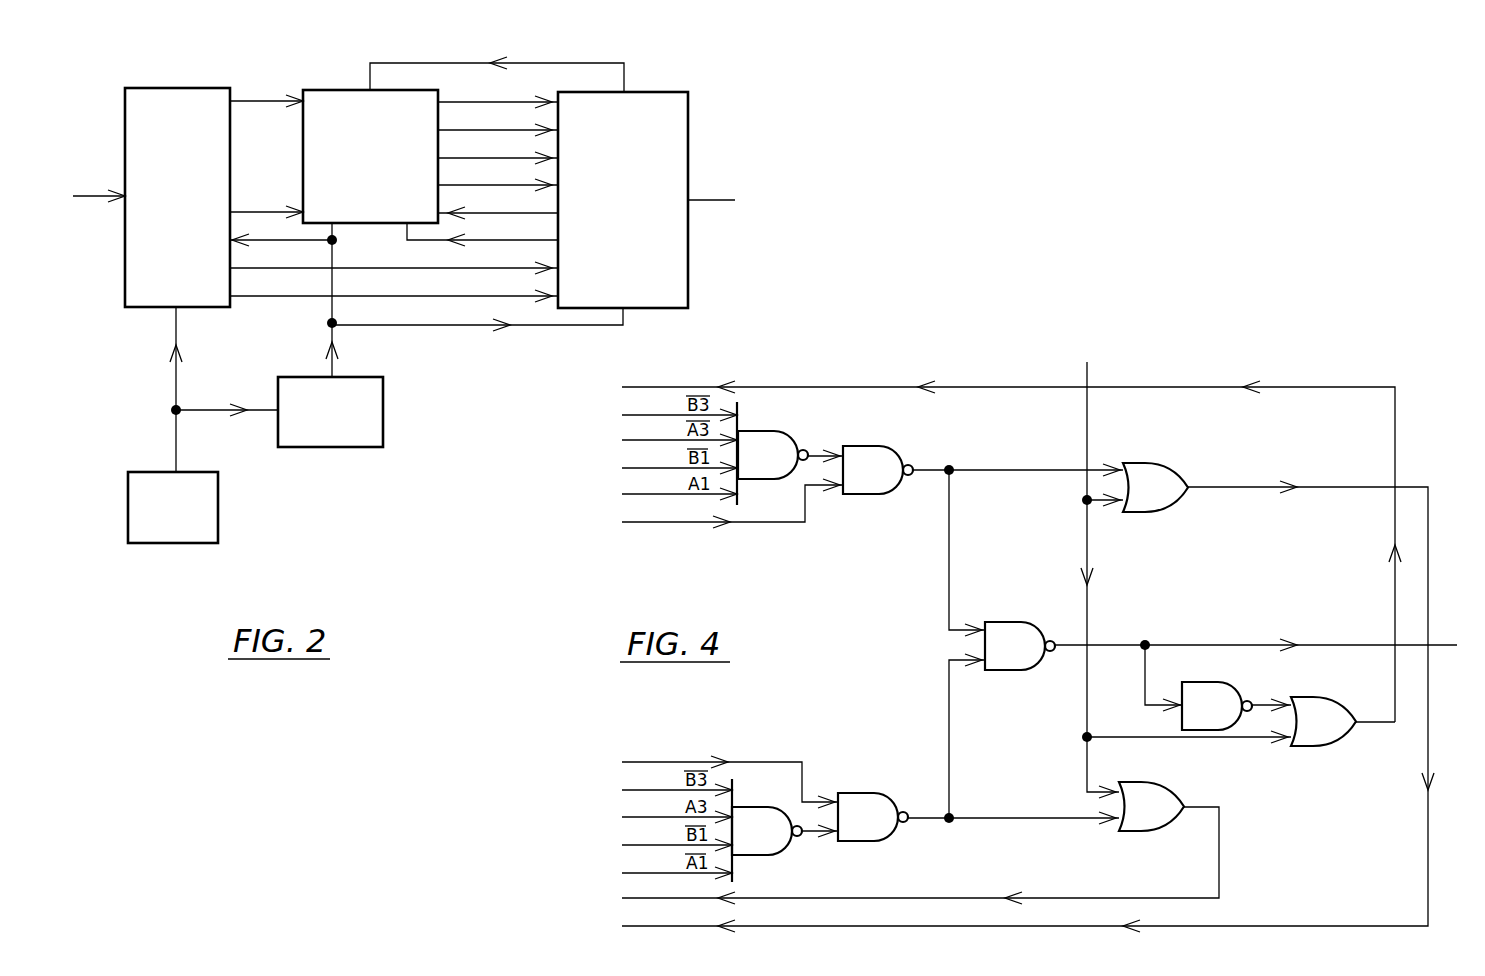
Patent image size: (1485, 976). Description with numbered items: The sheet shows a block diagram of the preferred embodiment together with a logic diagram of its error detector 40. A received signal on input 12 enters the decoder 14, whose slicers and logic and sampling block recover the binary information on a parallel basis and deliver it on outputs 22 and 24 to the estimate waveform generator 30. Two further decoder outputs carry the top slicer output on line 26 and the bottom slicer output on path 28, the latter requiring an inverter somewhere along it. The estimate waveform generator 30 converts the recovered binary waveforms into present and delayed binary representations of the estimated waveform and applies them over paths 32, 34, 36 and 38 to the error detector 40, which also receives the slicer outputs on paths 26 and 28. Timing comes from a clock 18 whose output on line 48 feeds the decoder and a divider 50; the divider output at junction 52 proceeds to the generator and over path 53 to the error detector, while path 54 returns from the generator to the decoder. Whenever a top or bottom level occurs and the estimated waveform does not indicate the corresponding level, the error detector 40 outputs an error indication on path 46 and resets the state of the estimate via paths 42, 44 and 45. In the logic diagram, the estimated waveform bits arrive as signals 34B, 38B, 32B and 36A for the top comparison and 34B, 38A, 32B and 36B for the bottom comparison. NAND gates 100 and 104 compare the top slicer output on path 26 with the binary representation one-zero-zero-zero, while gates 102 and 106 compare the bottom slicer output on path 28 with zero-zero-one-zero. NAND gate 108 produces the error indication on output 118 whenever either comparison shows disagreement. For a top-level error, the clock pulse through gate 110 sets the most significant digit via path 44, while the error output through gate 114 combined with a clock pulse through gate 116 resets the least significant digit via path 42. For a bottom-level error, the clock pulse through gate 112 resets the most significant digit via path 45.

In FIG. 2, the input line 12 is at (89, 194).
In FIG. 2, the decoder 14 is at (198, 88).
In FIG. 2, the clock 18 is at (189, 472).
In FIG. 2, the output 22 is at (273, 101).
In FIG. 2, the output 24 is at (273, 210).
In FIG. 2, the line 26 is at (436, 269).
In FIG. 4, the line 26 is at (667, 520).
In FIG. 2, the path 28 is at (436, 296).
In FIG. 4, the path 28 is at (667, 760).
In FIG. 2, the estimate waveform generator 30 is at (397, 90).
In FIG. 2, the path 32 is at (483, 104).
In FIG. 2, the path 34 is at (483, 132).
In FIG. 2, the path 36 is at (483, 160).
In FIG. 2, the path 38 is at (483, 187).
In FIG. 2, the error detector 40 is at (657, 92).
In FIG. 2, the path 42 is at (590, 64).
In FIG. 4, the path 42 is at (673, 386).
In FIG. 2, the path 44 is at (515, 242).
In FIG. 4, the path 44 is at (667, 924).
In FIG. 2, the path 45 is at (515, 214).
In FIG. 4, the path 45 is at (667, 896).
In FIG. 2, the path 46 is at (700, 200).
In FIG. 2, the clock line 48 is at (173, 441).
In FIG. 2, the divider 50 is at (351, 377).
In FIG. 2, the divider output line 52 is at (328, 317).
In FIG. 2, the divider output line 53 is at (432, 325).
In FIG. 4, the divider output line 53 is at (1088, 372).
In FIG. 2, the feedback line 54 is at (269, 239).
In FIG. 4, the signal line B3 34B is at (675, 414).
In FIG. 4, the signal line A3 38B is at (675, 439).
In FIG. 4, the signal line B1 32B is at (675, 467).
In FIG. 4, the signal line A1 36A is at (675, 493).
In FIG. 4, the signal line A3 38A is at (675, 816).
In FIG. 4, the signal line A1 36B is at (675, 872).
In FIG. 4, the NAND gate 100 is at (780, 431).
In FIG. 4, the NAND gate 102 is at (774, 855).
In FIG. 4, the NAND gate 104 is at (891, 450).
In FIG. 4, the NAND gate 106 is at (882, 842).
In FIG. 4, the NAND gate 108 is at (1031, 623).
In FIG. 4, the gate 110 is at (1170, 466).
In FIG. 4, the gate 112 is at (1170, 786).
In FIG. 4, the gate 114 is at (1230, 686).
In FIG. 4, the gate 116 is at (1333, 701).
In FIG. 4, the output line 118 is at (1431, 645).